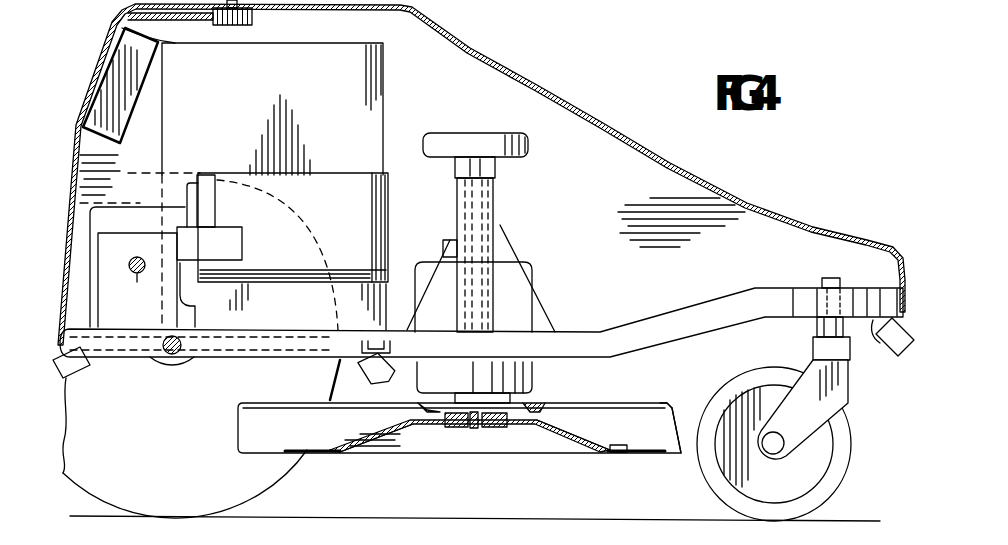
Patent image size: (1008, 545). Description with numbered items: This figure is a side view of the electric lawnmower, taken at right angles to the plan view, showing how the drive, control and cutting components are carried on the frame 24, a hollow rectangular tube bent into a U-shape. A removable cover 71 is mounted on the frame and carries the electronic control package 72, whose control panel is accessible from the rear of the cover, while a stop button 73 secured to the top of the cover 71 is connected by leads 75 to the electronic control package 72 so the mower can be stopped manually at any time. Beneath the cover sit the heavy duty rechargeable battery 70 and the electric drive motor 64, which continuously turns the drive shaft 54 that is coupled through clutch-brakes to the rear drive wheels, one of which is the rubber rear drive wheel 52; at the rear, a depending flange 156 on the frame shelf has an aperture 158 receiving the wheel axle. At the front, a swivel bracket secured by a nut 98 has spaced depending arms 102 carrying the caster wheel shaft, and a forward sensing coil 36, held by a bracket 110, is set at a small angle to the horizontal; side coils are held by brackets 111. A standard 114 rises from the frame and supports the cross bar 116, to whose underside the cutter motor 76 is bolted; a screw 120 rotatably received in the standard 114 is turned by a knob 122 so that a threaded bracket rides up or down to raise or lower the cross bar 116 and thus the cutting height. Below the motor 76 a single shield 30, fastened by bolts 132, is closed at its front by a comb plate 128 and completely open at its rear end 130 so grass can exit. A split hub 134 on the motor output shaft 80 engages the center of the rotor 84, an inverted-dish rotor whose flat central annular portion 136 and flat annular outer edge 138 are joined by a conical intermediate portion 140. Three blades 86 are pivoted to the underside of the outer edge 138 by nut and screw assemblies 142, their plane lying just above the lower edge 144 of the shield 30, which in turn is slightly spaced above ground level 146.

The frame 24 is at (683, 313).
The shield 30 is at (663, 400).
The sensing coil 36 is at (907, 360).
The rear drive wheel 52 is at (277, 473).
The drive shaft 54 is at (133, 272).
The electric drive motor 64 is at (326, 217).
The rechargeable battery 70 is at (322, 119).
The cover 71 is at (523, 94).
The electronic control package 72 is at (108, 67).
The stop button 73 is at (252, 14).
The leads 75 is at (180, 23).
The cutter motor 76 is at (532, 267).
The output shaft 80 is at (473, 428).
The rotor 84 is at (570, 453).
The blades 86 is at (310, 450).
The nut 98 is at (825, 282).
The depending arms 102 is at (843, 430).
The brackets 110 is at (883, 347).
The brackets 111 is at (355, 362).
The standard 114 is at (515, 255).
The cross bar 116 is at (446, 252).
The screw 120 is at (498, 192).
The knob 122 is at (502, 133).
The comb plate 128 is at (682, 447).
The rear end 130 is at (243, 427).
The bolts 132 is at (418, 410).
The split hub 134 is at (498, 428).
The central annular portion 136 is at (527, 420).
The annular outer edge 138 is at (620, 447).
The intermediate portion 140 is at (573, 455).
The nut and screw assembly 142 is at (337, 450).
The lower edge 144 is at (393, 455).
The ground level 146 is at (662, 520).
The depending flange 156 is at (180, 354).
The aperture 158 is at (165, 352).